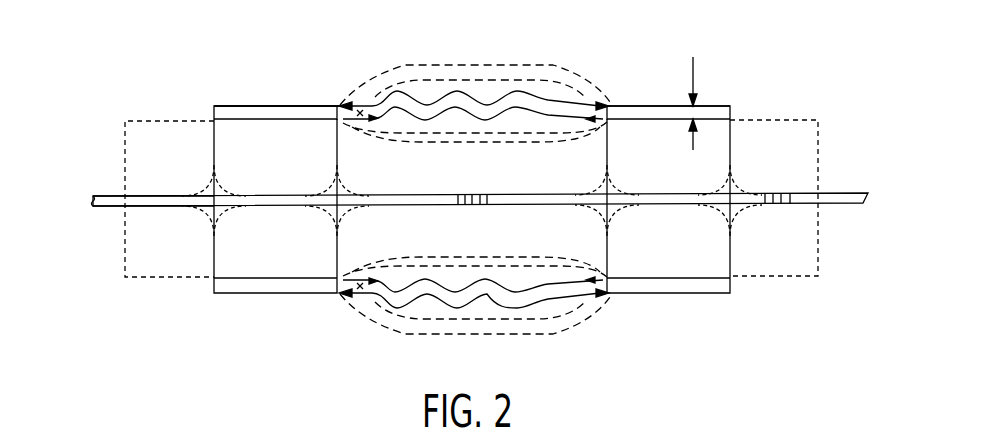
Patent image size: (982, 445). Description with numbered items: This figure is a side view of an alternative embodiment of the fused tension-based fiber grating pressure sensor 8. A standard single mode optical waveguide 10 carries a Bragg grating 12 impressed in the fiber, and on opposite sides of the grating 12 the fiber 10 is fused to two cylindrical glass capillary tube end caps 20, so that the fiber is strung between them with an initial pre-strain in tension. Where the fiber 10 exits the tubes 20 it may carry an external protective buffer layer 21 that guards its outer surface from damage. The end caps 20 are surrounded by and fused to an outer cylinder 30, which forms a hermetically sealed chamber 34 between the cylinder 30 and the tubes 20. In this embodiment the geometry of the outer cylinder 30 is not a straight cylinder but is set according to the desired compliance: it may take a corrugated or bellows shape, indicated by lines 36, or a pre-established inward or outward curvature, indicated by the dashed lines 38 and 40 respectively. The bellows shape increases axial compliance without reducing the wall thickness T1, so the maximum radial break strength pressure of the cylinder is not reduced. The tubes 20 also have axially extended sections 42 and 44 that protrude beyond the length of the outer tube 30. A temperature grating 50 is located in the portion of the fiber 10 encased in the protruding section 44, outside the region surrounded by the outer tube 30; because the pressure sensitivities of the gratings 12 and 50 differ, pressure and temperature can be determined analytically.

The fused tension-based fiber grating pressure sensor 8 is at (242, 80).
The optical waveguide 10 is at (123, 203).
The Bragg grating 12 is at (458, 194).
The glass capillary tube end caps 20 is at (472, 199).
The external protective buffer layer 21 is at (150, 208).
The outer cylinder 30 is at (280, 106).
The hermetically sealed chamber 34 is at (472, 149).
The corrugated shape lines 36 is at (583, 98).
The inward curvature dashed lines 38 is at (583, 137).
The outward curvature dashed lines 40 is at (523, 63).
The axially extended section 42 is at (180, 133).
The axially extended section 44 is at (797, 123).
The temperature grating 50 is at (790, 193).
The wall thickness T1 is at (693, 80).